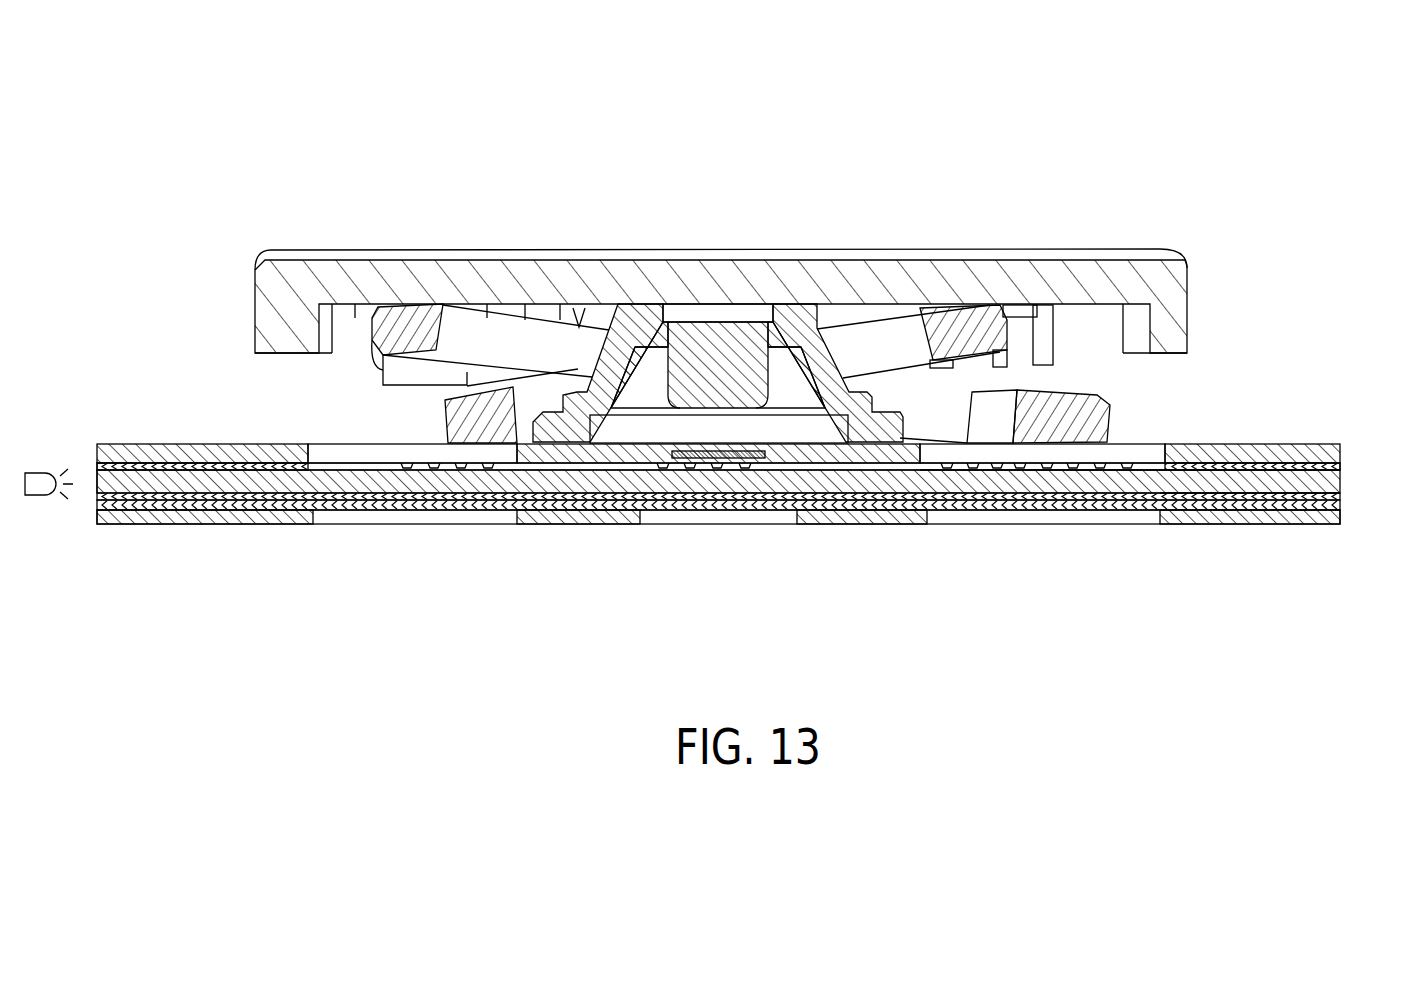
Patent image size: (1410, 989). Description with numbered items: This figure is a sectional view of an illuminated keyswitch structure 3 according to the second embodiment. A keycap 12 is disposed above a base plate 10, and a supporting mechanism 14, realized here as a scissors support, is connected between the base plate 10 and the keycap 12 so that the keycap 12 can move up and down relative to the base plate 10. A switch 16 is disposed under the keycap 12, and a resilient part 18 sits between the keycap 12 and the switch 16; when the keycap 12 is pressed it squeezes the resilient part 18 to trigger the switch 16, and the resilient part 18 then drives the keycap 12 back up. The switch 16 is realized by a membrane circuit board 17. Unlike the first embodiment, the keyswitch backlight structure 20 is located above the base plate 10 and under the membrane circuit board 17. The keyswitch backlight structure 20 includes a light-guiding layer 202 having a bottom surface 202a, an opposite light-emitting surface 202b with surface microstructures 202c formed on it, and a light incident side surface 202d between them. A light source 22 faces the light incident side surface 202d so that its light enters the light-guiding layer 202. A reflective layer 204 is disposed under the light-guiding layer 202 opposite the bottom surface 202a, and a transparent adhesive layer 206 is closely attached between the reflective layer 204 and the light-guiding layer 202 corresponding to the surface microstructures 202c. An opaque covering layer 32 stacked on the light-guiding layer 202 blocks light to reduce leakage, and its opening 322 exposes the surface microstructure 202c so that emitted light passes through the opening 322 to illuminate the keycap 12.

The illuminated keyswitch structure 3 is at (1166, 92).
The base plate 10 is at (1328, 527).
The keycap 12 is at (788, 270).
The supporting mechanism 14 is at (408, 403).
The switch 16 is at (702, 440).
The membrane circuit board 17 is at (1325, 453).
The resilient part 18 is at (737, 337).
The keyswitch backlight structure 20 is at (1348, 468).
The light source 22 is at (34, 473).
The opaque covering layer 32 is at (1340, 467).
The opening 322 is at (452, 467).
The light-guiding layer 202 is at (1063, 487).
The bottom surface 202a is at (1283, 506).
The light-emitting surface 202b is at (1270, 460).
The surface microstructures 202c is at (497, 467).
The light incident side surface 202d is at (92, 493).
The reflective layer 204 is at (1198, 510).
The transparent adhesive layer 206 is at (1130, 500).